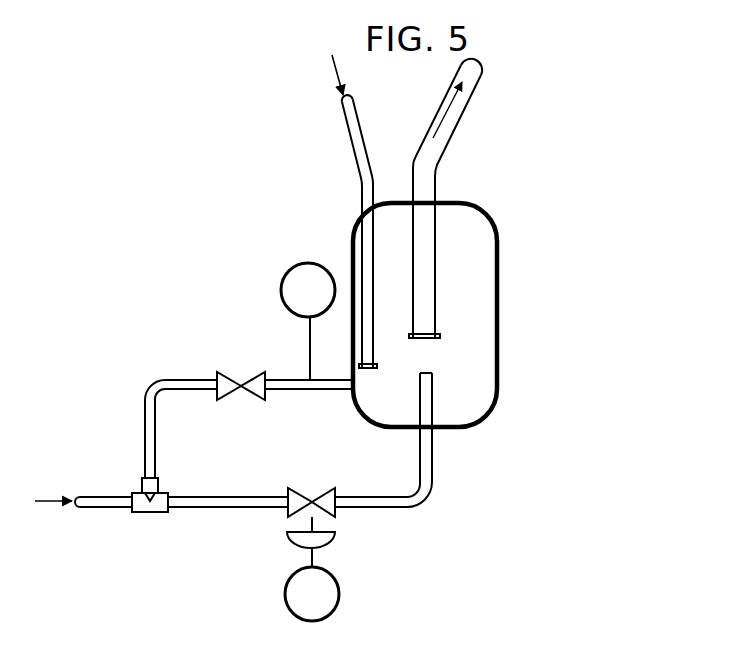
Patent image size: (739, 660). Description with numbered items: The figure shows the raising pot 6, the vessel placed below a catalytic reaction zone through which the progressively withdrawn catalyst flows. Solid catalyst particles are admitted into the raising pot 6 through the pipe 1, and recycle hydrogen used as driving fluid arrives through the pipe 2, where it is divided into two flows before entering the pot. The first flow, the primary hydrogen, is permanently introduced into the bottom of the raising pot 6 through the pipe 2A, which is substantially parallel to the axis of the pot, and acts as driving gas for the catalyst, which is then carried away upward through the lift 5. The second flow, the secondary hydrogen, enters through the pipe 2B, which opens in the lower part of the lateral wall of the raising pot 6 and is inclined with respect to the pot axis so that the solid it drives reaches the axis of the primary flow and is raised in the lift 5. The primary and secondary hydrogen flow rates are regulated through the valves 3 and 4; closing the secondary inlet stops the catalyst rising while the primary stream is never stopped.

The pipe 1 is at (348, 138).
The pipe 2 is at (118, 497).
The pipe 2A is at (423, 498).
The pipe 2B is at (190, 378).
The valve 3 is at (288, 268).
The valve 4 is at (340, 593).
The lift 5 is at (467, 105).
The raising pot 6 is at (497, 278).